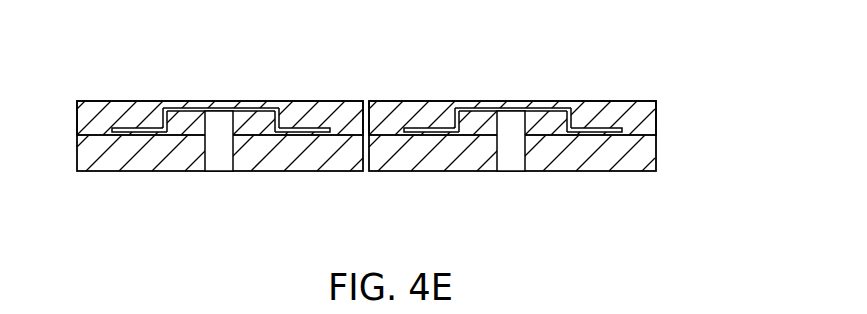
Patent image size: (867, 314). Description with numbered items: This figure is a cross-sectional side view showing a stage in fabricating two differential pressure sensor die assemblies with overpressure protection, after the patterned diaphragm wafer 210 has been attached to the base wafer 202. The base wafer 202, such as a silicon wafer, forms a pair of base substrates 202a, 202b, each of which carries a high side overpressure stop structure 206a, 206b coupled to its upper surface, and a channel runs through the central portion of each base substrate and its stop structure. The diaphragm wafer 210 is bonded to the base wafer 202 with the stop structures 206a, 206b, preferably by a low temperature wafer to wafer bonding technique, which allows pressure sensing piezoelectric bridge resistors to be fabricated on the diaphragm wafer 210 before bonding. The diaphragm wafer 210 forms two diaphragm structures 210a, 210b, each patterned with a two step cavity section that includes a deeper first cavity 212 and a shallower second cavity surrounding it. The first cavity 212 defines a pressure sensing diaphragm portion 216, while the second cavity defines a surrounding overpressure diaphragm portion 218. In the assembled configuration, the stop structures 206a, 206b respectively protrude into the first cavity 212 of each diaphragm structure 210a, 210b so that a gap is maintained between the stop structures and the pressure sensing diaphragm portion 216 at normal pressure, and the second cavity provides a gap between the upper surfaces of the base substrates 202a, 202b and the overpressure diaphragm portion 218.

The base wafer 202 is at (660, 159).
The base substrate 202a is at (243, 171).
The base substrate 202b is at (542, 171).
The patterned diaphragm wafer 210 is at (660, 123).
The diaphragm structure 210a is at (97, 101).
The diaphragm structure 210b is at (653, 101).
The first cavity 212 is at (165, 103).
The pressure sensing diaphragm portion 216 is at (233, 103).
The high side overpressure stop structure 206a is at (279, 103).
The high side overpressure stop structure 206b is at (563, 103).
The overpressure diaphragm portion 218 is at (123, 130).